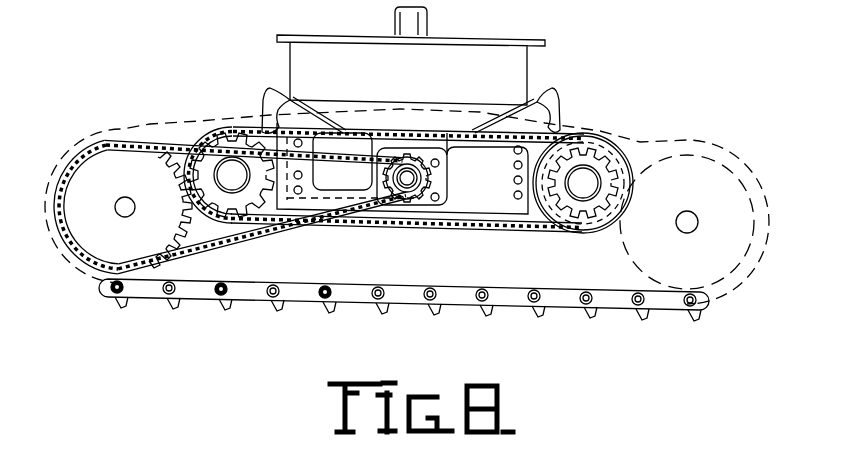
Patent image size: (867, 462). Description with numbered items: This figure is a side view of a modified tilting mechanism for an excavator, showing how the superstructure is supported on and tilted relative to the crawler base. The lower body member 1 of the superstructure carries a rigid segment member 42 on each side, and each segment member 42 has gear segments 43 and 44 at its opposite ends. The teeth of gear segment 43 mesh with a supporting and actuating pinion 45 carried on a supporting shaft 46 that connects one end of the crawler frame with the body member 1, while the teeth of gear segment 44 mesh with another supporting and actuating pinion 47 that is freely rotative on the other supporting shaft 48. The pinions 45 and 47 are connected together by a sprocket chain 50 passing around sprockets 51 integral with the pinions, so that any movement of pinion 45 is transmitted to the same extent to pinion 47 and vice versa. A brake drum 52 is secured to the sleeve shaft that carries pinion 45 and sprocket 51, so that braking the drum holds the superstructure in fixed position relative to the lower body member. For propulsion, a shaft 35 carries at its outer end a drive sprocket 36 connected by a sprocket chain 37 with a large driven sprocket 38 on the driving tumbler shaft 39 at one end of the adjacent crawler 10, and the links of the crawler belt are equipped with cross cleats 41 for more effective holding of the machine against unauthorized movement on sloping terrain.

The lower body member 1 is at (520, 65).
The crawler 10 is at (598, 304).
The shaft 35 is at (410, 178).
The drive sprocket 36 is at (397, 178).
The sprocket chain 37 is at (190, 121).
The large driven sprocket 38 is at (80, 264).
The driving tumbler shaft 39 is at (128, 214).
The cross cleats 41 is at (432, 305).
The segment member 42 is at (488, 128).
The gear segment 43 is at (553, 118).
The gear segment 44 is at (276, 112).
The supporting and actuating pinion 45 is at (627, 146).
The supporting shaft 46 is at (587, 182).
The supporting and actuating pinion 47 is at (213, 128).
The supporting shaft 48 is at (230, 175).
The sprocket chain 50 is at (388, 130).
The sprocket 51 is at (219, 219).
The brake drum 52 is at (594, 232).